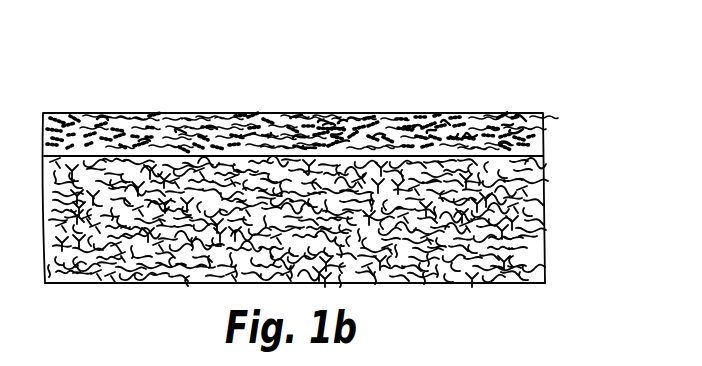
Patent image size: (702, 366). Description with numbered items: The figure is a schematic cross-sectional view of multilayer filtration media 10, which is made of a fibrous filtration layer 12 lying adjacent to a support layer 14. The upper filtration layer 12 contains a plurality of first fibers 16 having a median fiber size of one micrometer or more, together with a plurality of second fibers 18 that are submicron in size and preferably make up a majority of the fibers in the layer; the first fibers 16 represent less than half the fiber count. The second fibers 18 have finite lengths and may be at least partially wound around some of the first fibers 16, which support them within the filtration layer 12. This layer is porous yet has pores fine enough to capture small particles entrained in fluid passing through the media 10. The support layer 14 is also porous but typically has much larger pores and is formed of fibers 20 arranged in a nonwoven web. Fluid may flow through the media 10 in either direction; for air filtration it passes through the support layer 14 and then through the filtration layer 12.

The media 10 is at (467, 93).
The fibrous filtration layer 12 is at (543, 130).
The support layer 14 is at (543, 213).
The first fibers 16 is at (337, 119).
The second fibers 18 is at (405, 125).
The fibers 20 is at (546, 256).